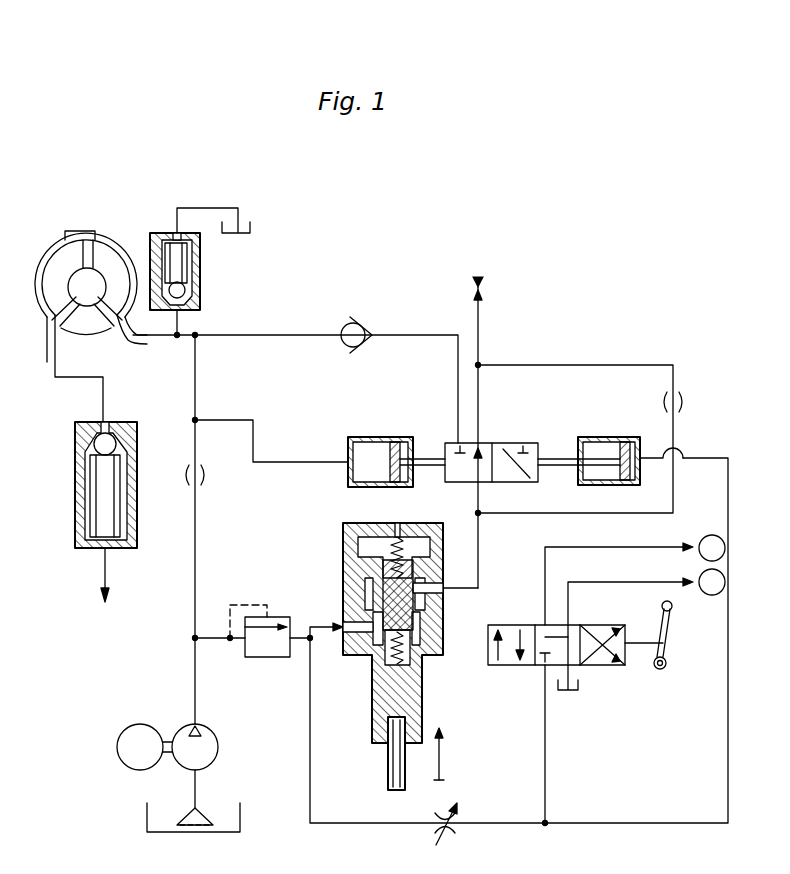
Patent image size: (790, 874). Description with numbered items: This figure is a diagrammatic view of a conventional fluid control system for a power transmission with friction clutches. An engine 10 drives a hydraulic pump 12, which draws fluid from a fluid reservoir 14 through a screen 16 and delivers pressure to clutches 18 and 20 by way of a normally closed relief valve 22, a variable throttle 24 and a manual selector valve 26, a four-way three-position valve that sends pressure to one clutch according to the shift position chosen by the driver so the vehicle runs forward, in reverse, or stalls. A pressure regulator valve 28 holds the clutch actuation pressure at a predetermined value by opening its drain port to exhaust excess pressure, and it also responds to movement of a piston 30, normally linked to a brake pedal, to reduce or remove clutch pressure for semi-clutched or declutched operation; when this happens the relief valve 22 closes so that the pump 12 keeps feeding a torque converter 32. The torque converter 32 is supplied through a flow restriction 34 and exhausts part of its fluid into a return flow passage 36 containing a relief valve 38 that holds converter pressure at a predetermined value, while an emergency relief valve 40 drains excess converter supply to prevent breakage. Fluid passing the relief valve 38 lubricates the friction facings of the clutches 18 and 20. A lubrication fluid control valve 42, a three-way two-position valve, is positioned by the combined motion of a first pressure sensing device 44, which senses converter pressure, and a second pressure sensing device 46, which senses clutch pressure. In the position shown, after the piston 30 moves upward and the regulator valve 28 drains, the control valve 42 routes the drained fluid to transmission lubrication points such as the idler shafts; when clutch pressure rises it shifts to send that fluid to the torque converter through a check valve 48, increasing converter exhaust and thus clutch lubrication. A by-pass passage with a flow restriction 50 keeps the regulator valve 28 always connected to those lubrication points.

The engine 10 is at (117, 745).
The hydraulic pump 12 is at (218, 745).
The fluid reservoir 14 is at (157, 815).
The screen 16 is at (205, 813).
The clutch 18 is at (704, 535).
The clutch 20 is at (708, 595).
The relief valve 22 is at (278, 615).
The variable throttle 24 is at (445, 840).
The manual selector valve 26 is at (605, 665).
The pressure regulator valve 28 is at (420, 628).
The piston 30 is at (393, 768).
The torque converter 32 is at (110, 260).
The flow restriction 34 is at (203, 475).
The return flow passage 36 is at (75, 380).
The relief valve 38 is at (137, 512).
The emergency relief valve 40 is at (200, 288).
The lubrication fluid control valve 42 is at (522, 443).
The first pressure sensing device 44 is at (383, 437).
The second pressure sensing device 46 is at (602, 437).
The check valve 48 is at (362, 318).
The flow restriction 50 is at (688, 402).